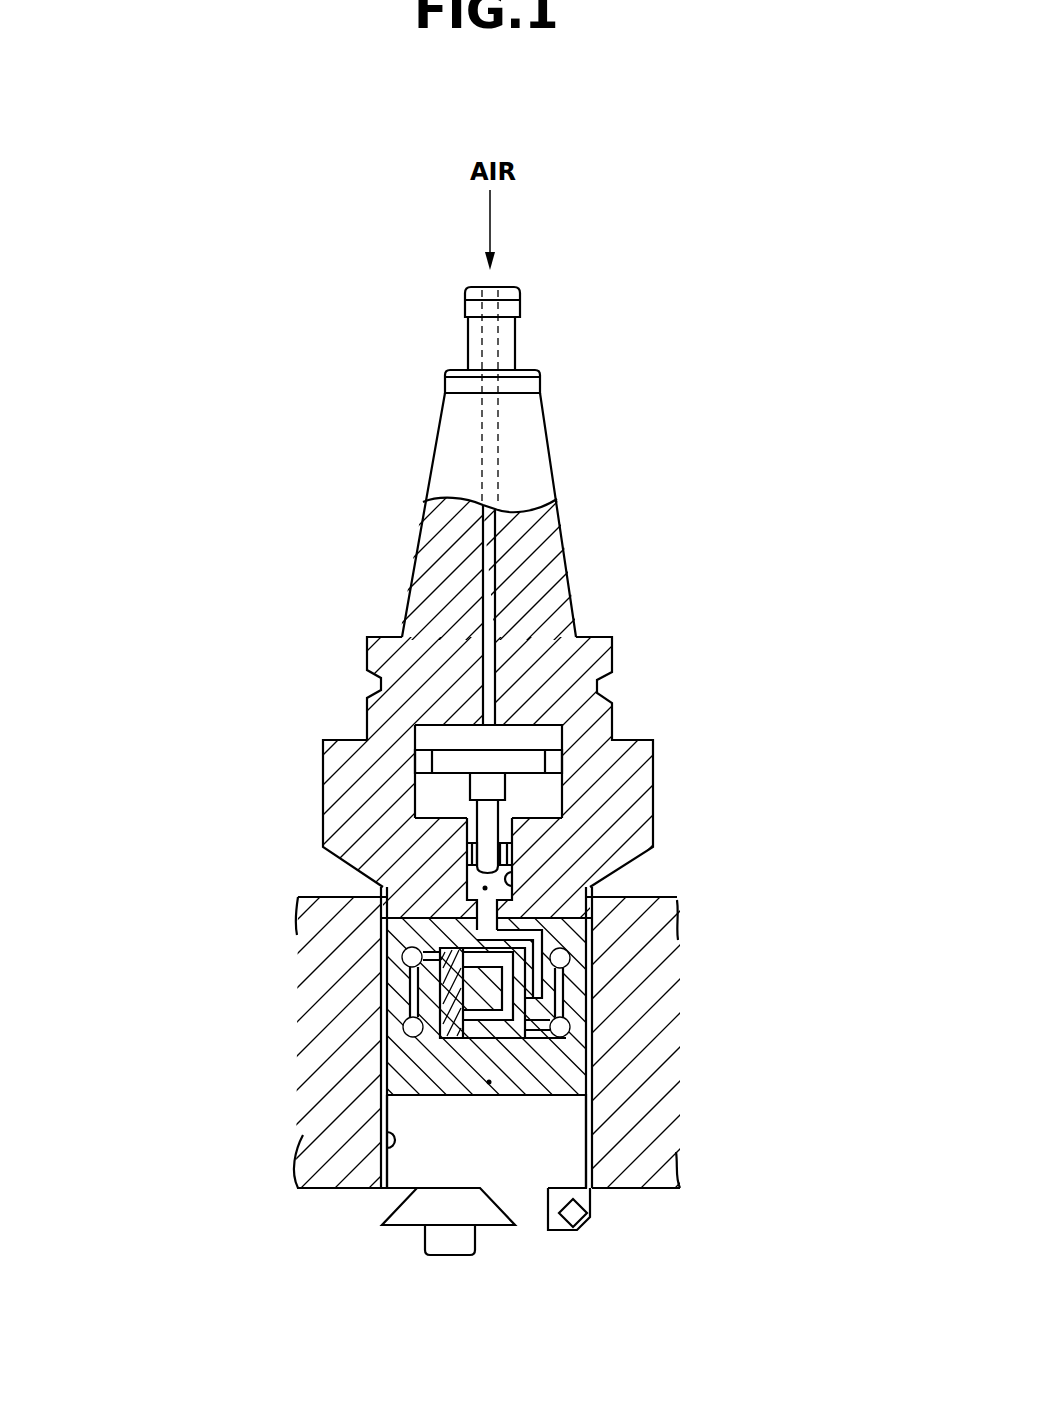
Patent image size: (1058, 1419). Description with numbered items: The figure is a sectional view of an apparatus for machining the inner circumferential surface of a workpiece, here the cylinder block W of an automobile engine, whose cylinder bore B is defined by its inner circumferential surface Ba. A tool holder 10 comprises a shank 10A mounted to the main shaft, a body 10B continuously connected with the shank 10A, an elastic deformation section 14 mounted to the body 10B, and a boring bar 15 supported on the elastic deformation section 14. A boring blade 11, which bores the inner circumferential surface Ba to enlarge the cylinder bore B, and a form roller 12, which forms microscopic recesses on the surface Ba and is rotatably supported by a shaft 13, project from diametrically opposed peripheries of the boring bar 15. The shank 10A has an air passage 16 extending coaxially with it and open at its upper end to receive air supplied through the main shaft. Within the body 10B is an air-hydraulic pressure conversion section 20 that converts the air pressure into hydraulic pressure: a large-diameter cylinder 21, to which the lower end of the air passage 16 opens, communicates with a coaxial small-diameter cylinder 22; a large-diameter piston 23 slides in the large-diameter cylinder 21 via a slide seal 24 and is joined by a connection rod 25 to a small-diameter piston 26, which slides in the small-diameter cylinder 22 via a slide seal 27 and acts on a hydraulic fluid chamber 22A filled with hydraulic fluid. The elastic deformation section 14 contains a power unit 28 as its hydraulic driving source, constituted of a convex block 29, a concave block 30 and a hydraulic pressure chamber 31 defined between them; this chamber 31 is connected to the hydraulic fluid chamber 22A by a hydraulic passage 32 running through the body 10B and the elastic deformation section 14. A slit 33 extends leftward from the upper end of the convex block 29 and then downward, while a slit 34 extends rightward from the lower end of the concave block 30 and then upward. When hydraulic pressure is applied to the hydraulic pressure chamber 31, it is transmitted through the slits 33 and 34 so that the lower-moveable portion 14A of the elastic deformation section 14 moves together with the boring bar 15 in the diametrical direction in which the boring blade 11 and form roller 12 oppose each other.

The tool holder 10 is at (573, 411).
The shank 10A is at (428, 455).
The body 10B is at (335, 755).
The boring blade 11 is at (583, 1228).
The form roller 12 is at (415, 1213).
The shaft 13 is at (447, 1256).
The elastic deformation section 14 is at (395, 1007).
The lower-moveable portion 14A is at (490, 1084).
The boring bar 15 is at (390, 1110).
The air passage 16 is at (490, 558).
The air-hydraulic pressure conversion section 20 is at (461, 716).
The large-diameter cylinder 21 is at (410, 735).
The small-diameter cylinder 22 is at (482, 868).
The hydraulic fluid chamber 22A is at (481, 888).
The large-diameter piston 23 is at (533, 770).
The slide seal 24 is at (565, 745).
The connection rod 25 is at (478, 790).
The small-diameter piston 26 is at (513, 832).
The slide seal 27 is at (512, 880).
The power unit 28 is at (441, 1044).
The convex block 29 is at (402, 1025).
The concave block 30 is at (567, 1015).
The hydraulic pressure chamber 31 is at (540, 1050).
The hydraulic passage 32 is at (460, 950).
The slit 33 is at (402, 965).
The slit 34 is at (571, 964).
The cylinder bore B is at (345, 1190).
The inner circumferential surface Ba is at (373, 1171).
The cylinder block W is at (645, 1192).